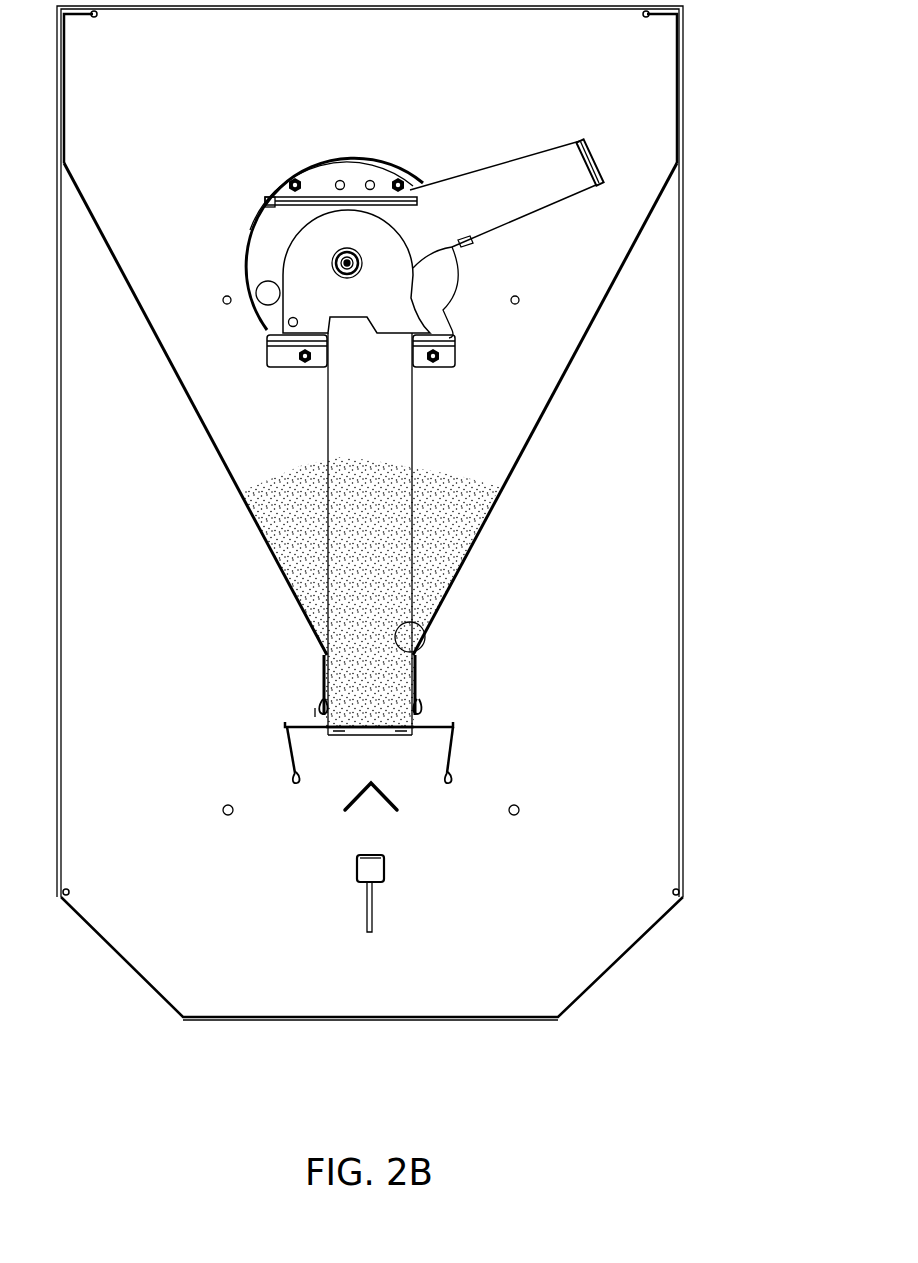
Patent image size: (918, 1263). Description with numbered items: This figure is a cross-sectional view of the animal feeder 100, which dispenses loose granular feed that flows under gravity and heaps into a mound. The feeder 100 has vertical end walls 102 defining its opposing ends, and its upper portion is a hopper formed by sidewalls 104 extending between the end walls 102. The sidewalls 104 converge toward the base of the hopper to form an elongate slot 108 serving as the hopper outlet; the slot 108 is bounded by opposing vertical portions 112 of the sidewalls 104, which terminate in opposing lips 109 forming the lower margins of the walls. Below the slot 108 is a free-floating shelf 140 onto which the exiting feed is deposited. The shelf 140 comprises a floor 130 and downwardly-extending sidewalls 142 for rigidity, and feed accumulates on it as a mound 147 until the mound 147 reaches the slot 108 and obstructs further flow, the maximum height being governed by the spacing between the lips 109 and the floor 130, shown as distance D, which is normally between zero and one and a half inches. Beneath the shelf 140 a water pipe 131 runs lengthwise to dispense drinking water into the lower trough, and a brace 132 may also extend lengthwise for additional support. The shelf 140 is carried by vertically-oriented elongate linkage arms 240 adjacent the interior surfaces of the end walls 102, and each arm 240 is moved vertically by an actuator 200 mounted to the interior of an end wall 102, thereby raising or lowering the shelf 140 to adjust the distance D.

The animal feeder 100 is at (769, 613).
The end wall 102 is at (177, 904).
The sidewall 104 is at (550, 403).
The slot 108 is at (413, 623).
The lip 109 is at (323, 703).
The vertical portion 112 is at (323, 663).
The floor 130 is at (308, 728).
The water pipe 131 is at (384, 867).
The brace 132 is at (340, 808).
The shelf 140 is at (480, 761).
The sidewall 142 is at (290, 753).
The mound 147 is at (427, 713).
The actuator 200 is at (216, 145).
The linkage arm 240 is at (412, 428).
The distance D is at (313, 713).